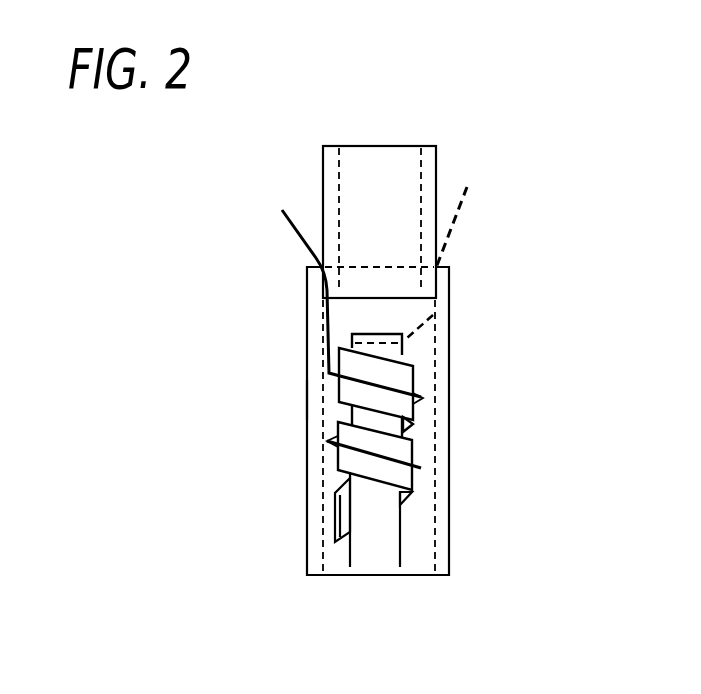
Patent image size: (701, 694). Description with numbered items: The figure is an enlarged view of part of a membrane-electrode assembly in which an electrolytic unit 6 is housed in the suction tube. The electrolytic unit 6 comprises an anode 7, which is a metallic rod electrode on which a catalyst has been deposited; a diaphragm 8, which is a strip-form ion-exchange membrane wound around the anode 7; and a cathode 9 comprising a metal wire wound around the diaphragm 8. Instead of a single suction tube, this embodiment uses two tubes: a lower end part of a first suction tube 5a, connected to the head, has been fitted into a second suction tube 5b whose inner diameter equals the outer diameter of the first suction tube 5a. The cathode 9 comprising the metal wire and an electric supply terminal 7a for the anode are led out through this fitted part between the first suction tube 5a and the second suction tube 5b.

The first suction tube 5a is at (427, 175).
The second suction tube 5b is at (438, 552).
The electrolytic unit 6 is at (283, 400).
The anode 7 is at (385, 519).
The electric supply terminal 7a is at (453, 225).
The diaphragm 8 is at (393, 447).
The cathode 9 is at (387, 385).